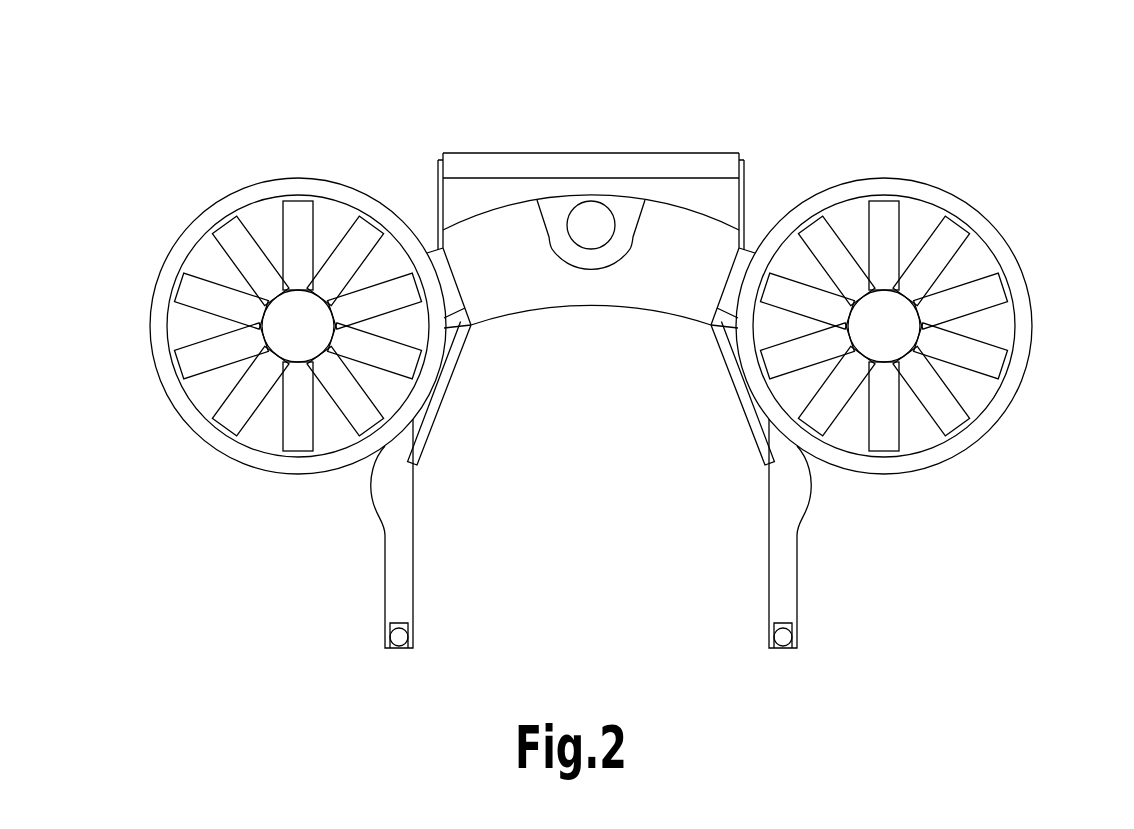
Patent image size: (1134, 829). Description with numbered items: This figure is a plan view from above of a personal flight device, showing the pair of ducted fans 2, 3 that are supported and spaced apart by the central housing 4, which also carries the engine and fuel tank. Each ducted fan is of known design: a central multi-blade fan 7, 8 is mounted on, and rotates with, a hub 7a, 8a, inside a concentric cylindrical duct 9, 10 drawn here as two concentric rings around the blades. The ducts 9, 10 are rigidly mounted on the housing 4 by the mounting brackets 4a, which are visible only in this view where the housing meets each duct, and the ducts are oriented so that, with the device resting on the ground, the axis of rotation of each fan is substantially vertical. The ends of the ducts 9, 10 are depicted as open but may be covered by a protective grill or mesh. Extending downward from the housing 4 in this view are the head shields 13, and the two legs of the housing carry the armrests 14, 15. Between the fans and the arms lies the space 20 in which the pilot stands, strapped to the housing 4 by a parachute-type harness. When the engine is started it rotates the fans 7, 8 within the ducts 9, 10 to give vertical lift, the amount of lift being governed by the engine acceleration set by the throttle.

The ducted fan 2 is at (289, 179).
The ducted fan 3 is at (931, 186).
The central housing 4 is at (563, 305).
The mounting brackets 4a is at (432, 252).
The multi-blade fan 7 is at (184, 290).
The hub 7a is at (270, 303).
The multi-blade fan 8 is at (997, 350).
The hub 8a is at (909, 300).
The cylindrical duct 9 is at (203, 441).
The cylindrical duct 10 is at (979, 441).
The head shields 13 is at (442, 404).
The armrest 14 is at (417, 580).
The armrest 15 is at (765, 580).
The space 20 is at (626, 503).